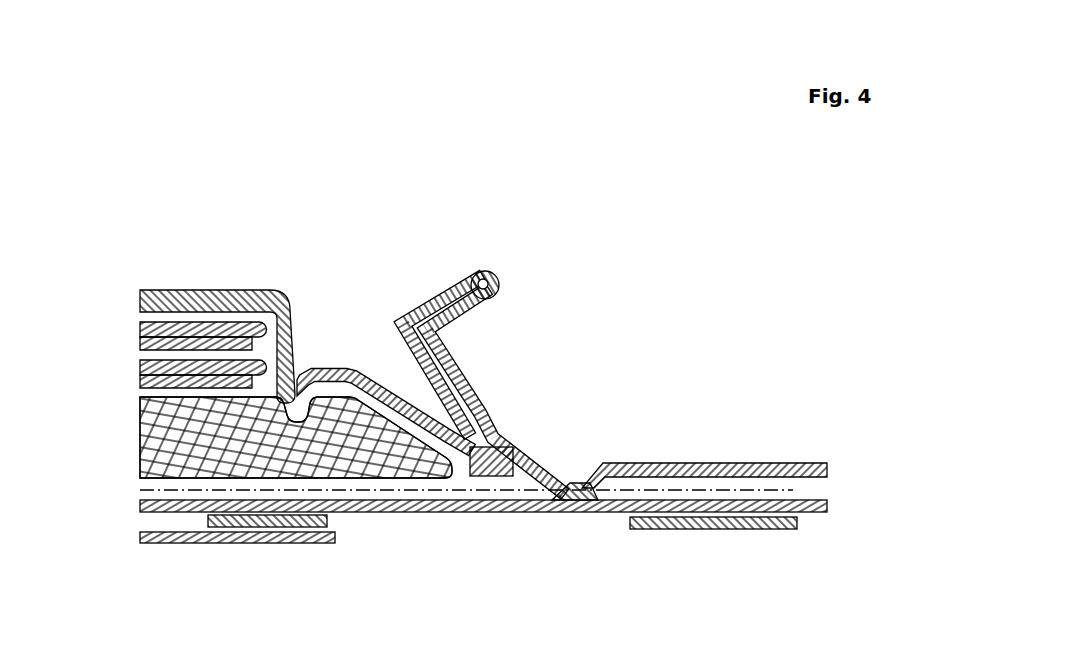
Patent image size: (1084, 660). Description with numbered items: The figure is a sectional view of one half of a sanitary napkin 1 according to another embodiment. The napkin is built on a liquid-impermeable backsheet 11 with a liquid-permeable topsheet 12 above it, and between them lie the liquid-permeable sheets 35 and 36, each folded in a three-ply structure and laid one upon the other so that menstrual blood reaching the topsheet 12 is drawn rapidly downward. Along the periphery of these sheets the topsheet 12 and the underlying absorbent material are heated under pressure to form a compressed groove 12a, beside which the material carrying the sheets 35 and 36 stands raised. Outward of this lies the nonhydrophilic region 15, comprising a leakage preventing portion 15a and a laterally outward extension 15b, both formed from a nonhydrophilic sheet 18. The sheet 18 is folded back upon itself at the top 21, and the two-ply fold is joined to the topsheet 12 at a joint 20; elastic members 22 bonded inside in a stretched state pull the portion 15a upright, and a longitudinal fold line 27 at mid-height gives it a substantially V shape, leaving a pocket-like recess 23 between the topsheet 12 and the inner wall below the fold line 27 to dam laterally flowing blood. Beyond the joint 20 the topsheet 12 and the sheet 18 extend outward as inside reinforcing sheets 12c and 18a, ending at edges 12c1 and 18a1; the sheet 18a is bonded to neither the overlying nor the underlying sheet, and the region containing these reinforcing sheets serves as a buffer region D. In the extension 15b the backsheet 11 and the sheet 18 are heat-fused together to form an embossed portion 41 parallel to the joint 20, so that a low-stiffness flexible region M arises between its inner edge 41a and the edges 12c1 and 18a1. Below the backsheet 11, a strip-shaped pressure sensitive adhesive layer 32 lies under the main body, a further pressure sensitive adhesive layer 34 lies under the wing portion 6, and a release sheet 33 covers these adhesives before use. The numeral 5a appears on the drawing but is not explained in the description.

The sanitary napkin 1 is at (603, 247).
The housing portion 5a is at (445, 478).
The wing portion 6 is at (523, 567).
The backsheet 11 is at (828, 507).
The topsheet 12 is at (233, 288).
The compressed groove 12a is at (298, 378).
The inside reinforcing sheet 12c is at (498, 476).
The edge of inside reinforcing sheet 12c1 is at (527, 478).
The nonhydrophilic region 15 is at (622, 400).
The leakage preventing portion 15a is at (461, 347).
The extension 15b is at (787, 460).
The nonhydrophilic sheet 18 is at (492, 306).
The inside reinforcing sheet 18a is at (506, 421).
The edge of inside reinforcing sheet 18a1 is at (558, 440).
The joint 20 is at (428, 424).
The top 21 is at (493, 272).
The elastic member 22 is at (424, 302).
The recess 23 is at (363, 369).
The fold line 27 is at (395, 322).
The pressure sensitive adhesive layer 32 is at (268, 527).
The release sheet 33 is at (190, 543).
The pressure sensitive adhesive layer 34 is at (667, 530).
The liquid-permeable sheet 35 is at (131, 354).
The liquid-permeable sheet 36 is at (131, 316).
The embossed portion 41 is at (575, 485).
The inner edge of embossed portion 41a is at (549, 486).
The buffer region D is at (490, 411).
The flexible region M is at (556, 454).